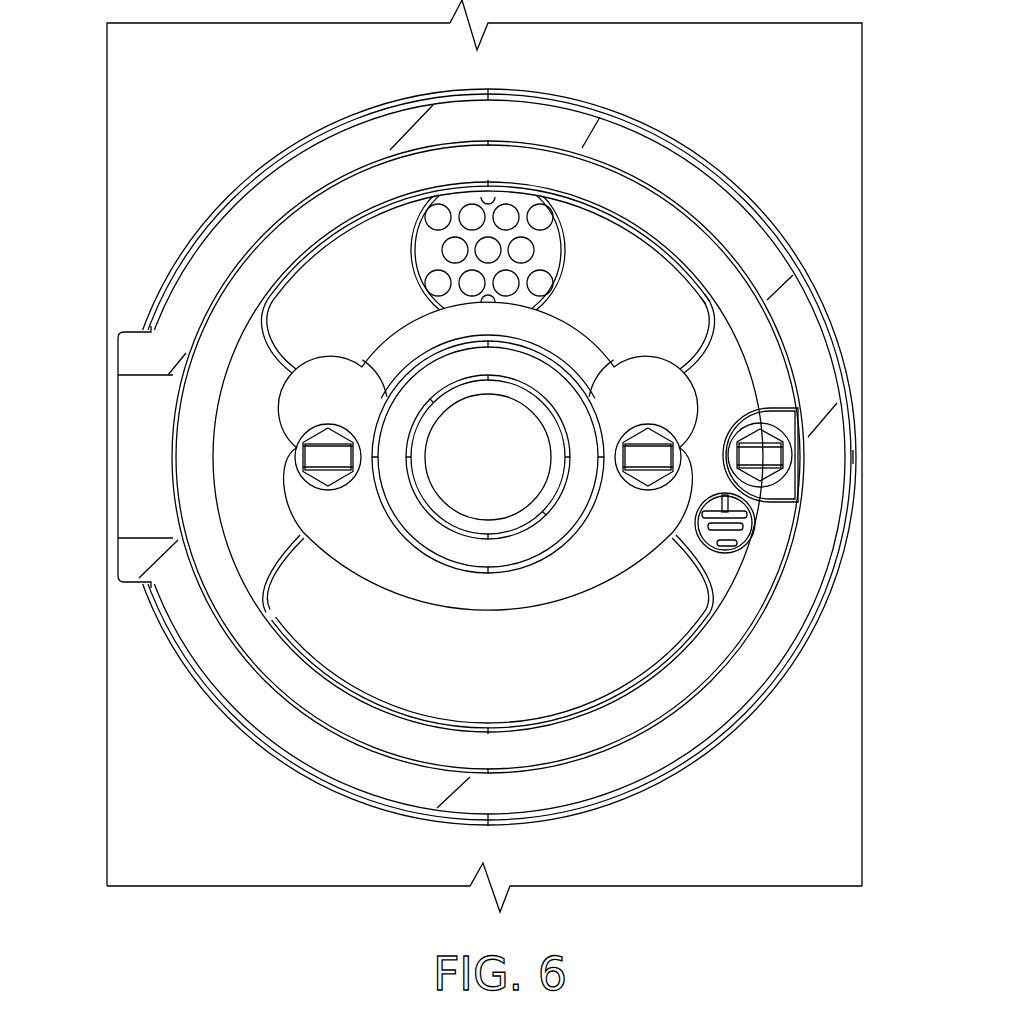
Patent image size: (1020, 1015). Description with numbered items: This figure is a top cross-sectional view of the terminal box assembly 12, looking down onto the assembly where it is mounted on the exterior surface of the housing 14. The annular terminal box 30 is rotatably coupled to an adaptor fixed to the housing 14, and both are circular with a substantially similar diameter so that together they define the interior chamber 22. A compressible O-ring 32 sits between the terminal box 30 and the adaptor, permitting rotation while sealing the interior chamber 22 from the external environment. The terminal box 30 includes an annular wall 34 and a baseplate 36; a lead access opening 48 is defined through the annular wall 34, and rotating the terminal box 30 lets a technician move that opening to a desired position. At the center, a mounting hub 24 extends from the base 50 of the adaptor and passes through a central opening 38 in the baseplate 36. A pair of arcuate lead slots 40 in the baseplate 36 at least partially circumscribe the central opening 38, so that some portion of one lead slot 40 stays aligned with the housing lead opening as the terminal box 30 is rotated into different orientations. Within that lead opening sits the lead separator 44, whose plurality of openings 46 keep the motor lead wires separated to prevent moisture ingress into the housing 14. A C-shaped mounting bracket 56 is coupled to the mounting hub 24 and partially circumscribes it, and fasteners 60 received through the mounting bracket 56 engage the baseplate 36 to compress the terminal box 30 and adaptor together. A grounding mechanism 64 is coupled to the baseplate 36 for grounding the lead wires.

The terminal box assembly 12 is at (128, 146).
The housing 14 is at (123, 852).
The interior chamber 22 is at (586, 678).
The mounting hub 24 is at (468, 550).
The terminal box 30 is at (456, 457).
The O-ring 32 is at (163, 633).
The annular wall 34 is at (205, 648).
The baseplate 36 is at (233, 517).
The central opening 38 is at (594, 320).
The lead slots 40 is at (497, 513).
The lead separator 44 is at (547, 250).
The openings 46 is at (521, 174).
The lead access opening 48 is at (128, 386).
The base 50 is at (593, 237).
The mounting bracket 56 is at (660, 385).
The fastener 60 is at (300, 458).
The grounding mechanism 64 is at (772, 470).